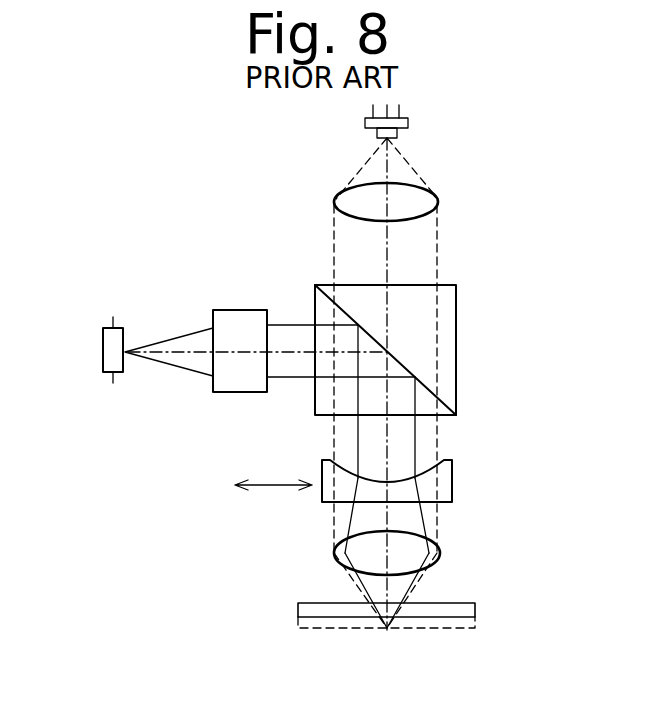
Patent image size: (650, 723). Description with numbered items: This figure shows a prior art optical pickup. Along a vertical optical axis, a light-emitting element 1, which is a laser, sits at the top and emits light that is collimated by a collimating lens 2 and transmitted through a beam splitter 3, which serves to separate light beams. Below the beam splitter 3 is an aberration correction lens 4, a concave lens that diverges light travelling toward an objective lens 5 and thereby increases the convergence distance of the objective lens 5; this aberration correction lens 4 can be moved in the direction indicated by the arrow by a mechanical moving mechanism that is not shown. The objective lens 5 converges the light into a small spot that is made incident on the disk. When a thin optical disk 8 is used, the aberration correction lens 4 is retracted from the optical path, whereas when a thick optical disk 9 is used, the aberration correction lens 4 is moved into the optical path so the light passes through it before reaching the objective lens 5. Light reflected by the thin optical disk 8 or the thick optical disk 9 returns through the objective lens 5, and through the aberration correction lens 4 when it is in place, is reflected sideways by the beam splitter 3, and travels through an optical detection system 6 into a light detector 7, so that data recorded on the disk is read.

The light-emitting element 1 is at (408, 124).
The collimating lens 2 is at (422, 204).
The beam splitter 3 is at (447, 343).
The aberration correction lens 4 is at (446, 488).
The objective lens 5 is at (430, 553).
The optical detection system 6 is at (235, 317).
The light detector 7 is at (112, 348).
The thin optical disk 8 is at (470, 603).
The thick optical disk 9 is at (475, 628).